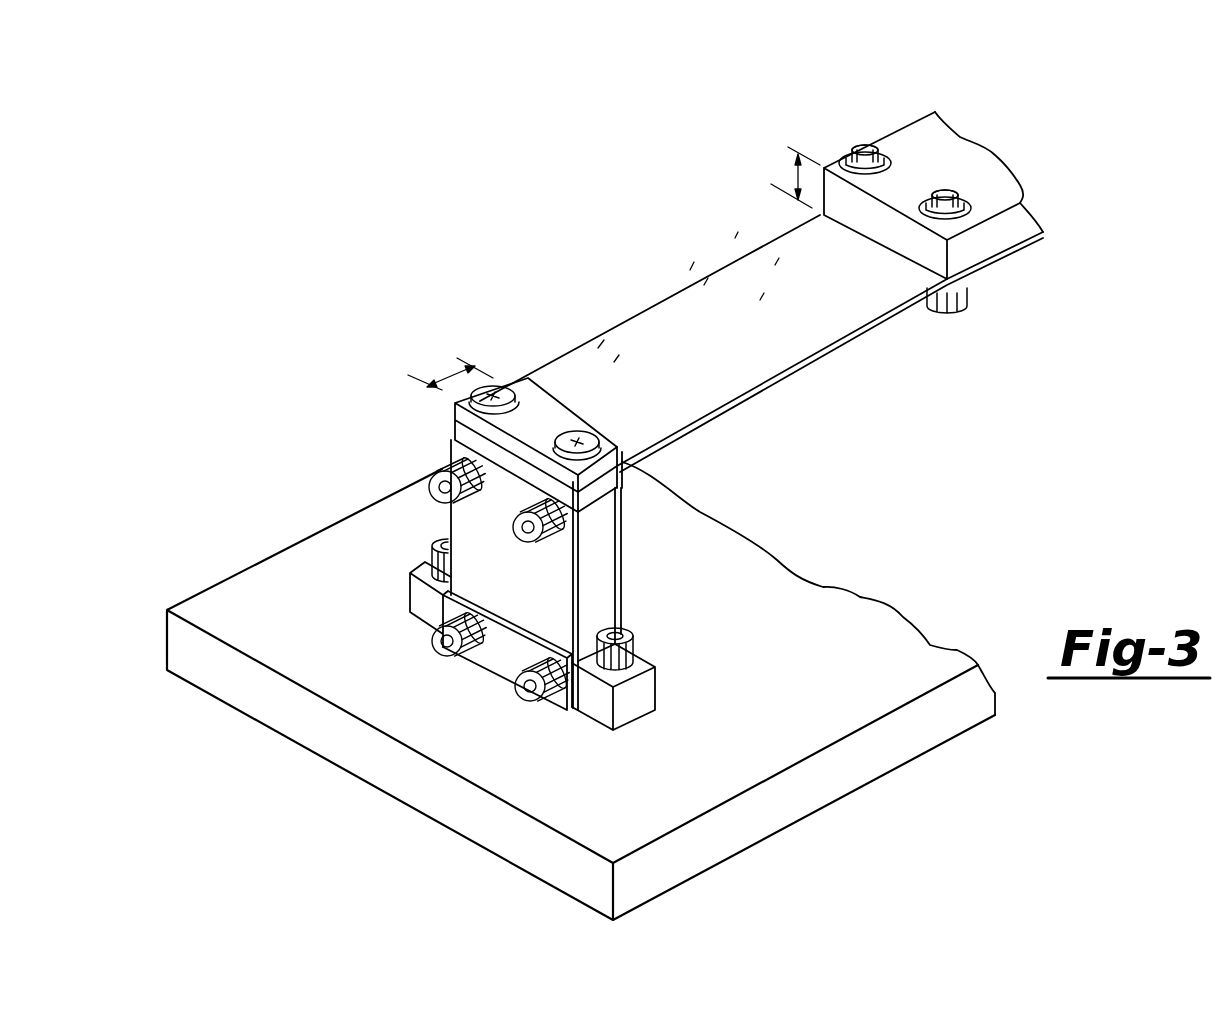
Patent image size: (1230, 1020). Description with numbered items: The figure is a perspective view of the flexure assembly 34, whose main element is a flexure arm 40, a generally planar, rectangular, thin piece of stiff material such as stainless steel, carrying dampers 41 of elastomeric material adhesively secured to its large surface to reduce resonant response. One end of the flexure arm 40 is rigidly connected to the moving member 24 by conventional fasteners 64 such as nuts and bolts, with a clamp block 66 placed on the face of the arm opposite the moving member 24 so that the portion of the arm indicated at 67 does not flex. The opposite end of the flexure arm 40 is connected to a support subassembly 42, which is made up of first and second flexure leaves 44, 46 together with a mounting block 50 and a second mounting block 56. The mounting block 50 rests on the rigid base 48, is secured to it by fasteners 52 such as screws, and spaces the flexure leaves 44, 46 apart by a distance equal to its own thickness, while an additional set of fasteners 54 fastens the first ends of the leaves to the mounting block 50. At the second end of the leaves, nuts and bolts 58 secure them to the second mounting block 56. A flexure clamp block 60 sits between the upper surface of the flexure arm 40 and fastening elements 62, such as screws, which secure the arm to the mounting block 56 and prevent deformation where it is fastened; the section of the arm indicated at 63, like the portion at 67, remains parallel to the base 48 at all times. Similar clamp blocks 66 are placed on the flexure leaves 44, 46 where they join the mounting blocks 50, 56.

The moving member 24 is at (922, 150).
The flexure assembly 34 is at (398, 302).
The flexure arm 40 is at (816, 347).
The dampers 41 is at (730, 295).
The support subassembly 42 is at (620, 552).
The first flexure leaf 44 is at (428, 556).
The second flexure leaf 46 is at (590, 606).
The base 48 is at (826, 671).
The mounting block 50 is at (602, 707).
The fasteners 52 is at (638, 660).
The fasteners 54 is at (437, 640).
The second mounting block 56 is at (603, 510).
The nuts and bolts 58 is at (440, 466).
The flexure clamp block 60 is at (530, 415).
The fastening elements 62 is at (587, 437).
The section of the flexure arm 63 is at (451, 376).
The fasteners 64 is at (945, 310).
The clamp block 66 is at (625, 478).
The portion of the flexure arm 67 is at (798, 180).